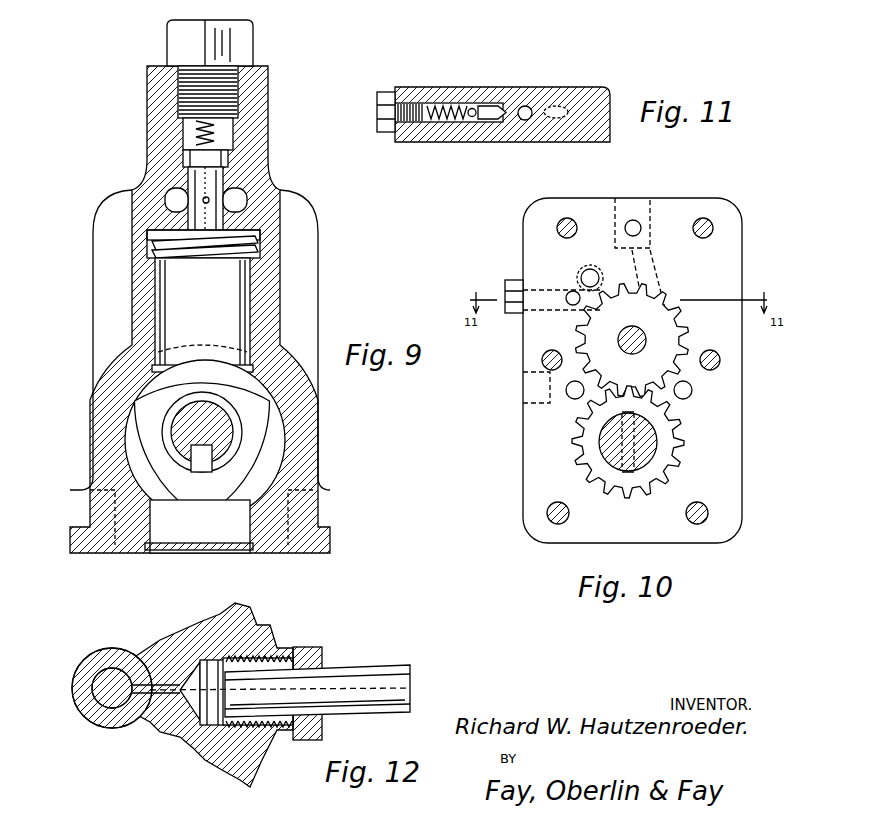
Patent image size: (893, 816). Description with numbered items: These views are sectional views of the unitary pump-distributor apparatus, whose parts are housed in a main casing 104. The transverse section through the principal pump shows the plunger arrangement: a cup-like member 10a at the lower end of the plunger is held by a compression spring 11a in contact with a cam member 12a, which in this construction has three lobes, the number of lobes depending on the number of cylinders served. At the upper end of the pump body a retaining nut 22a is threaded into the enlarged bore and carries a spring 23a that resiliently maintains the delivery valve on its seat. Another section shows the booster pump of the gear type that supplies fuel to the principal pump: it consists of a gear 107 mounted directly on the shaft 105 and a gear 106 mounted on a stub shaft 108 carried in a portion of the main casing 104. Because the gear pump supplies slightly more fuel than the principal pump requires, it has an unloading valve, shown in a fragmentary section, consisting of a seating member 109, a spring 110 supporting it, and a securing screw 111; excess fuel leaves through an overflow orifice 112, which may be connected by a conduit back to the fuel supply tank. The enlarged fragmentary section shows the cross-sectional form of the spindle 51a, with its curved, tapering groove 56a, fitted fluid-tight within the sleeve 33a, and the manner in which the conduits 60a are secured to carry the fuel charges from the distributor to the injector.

In FIG. 9, the retaining nut 22a is at (238, 43).
In FIG. 9, the main casing 104 is at (262, 86).
In FIG. 12, the main casing 104 is at (245, 626).
In FIG. 9, the spring 23a is at (218, 130).
In FIG. 9, the compression spring 11a is at (147, 240).
In FIG. 9, the cup-like member 10a is at (202, 315).
In FIG. 9, the cam member 12a is at (258, 412).
In FIG. 11, the securing screw 111 is at (373, 131).
In FIG. 10, the securing screw 111 is at (510, 278).
In FIG. 11, the spring 110 is at (442, 125).
In FIG. 11, the overflow orifice 112 is at (447, 135).
In FIG. 10, the overflow orifice 112 is at (567, 304).
In FIG. 11, the seating member 109 is at (488, 110).
In FIG. 10, the gear 106 is at (688, 325).
In FIG. 10, the stub shaft 108 is at (632, 340).
In FIG. 10, the gear 107 is at (665, 432).
In FIG. 10, the shaft 105 is at (646, 446).
In FIG. 12, the spindle 51a is at (84, 706).
In FIG. 12, the sleeve 33a is at (112, 700).
In FIG. 12, the groove 56a is at (122, 712).
In FIG. 12, the fuel conduit 60a is at (368, 682).